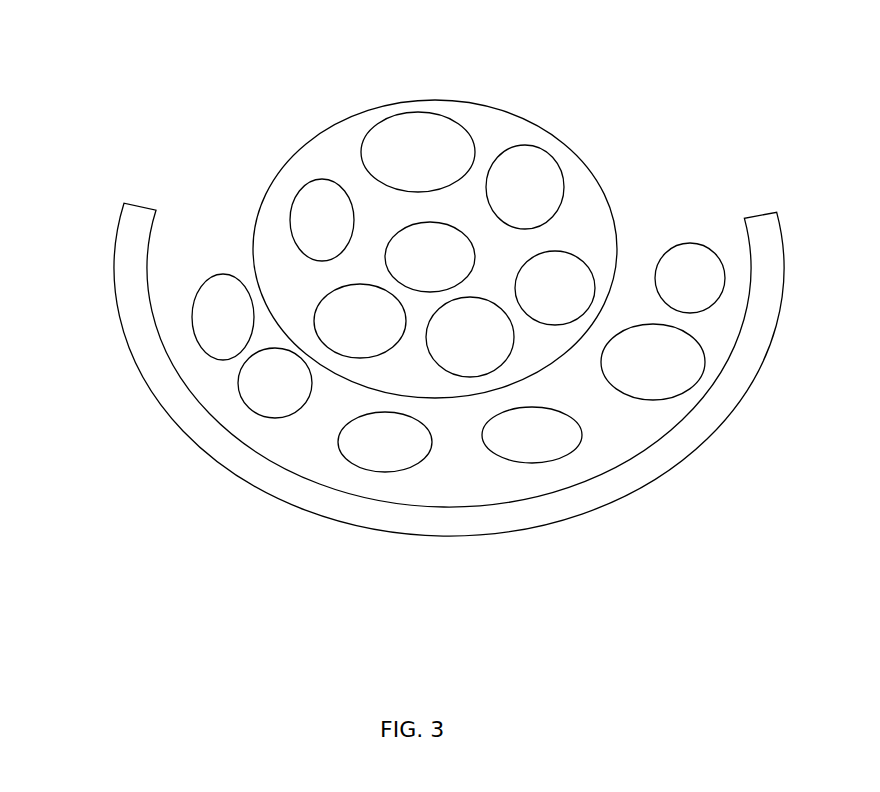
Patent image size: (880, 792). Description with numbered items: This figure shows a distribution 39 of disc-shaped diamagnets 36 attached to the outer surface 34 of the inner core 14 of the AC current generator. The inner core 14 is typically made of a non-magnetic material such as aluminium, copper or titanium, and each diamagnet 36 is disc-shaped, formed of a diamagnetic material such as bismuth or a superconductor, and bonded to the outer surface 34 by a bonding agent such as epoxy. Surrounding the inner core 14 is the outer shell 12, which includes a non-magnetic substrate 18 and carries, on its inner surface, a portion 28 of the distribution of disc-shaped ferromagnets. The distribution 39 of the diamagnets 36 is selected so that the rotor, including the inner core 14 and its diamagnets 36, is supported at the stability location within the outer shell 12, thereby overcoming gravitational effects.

The outer shell 12 is at (399, 369).
The inner core 14 is at (437, 235).
The substrate 18 is at (172, 400).
The portion of distribution of ferromagnets 28 is at (615, 439).
The outer surface 34 is at (493, 130).
The diamagnet 36 is at (437, 270).
The distribution of diamagnets 39 is at (578, 168).